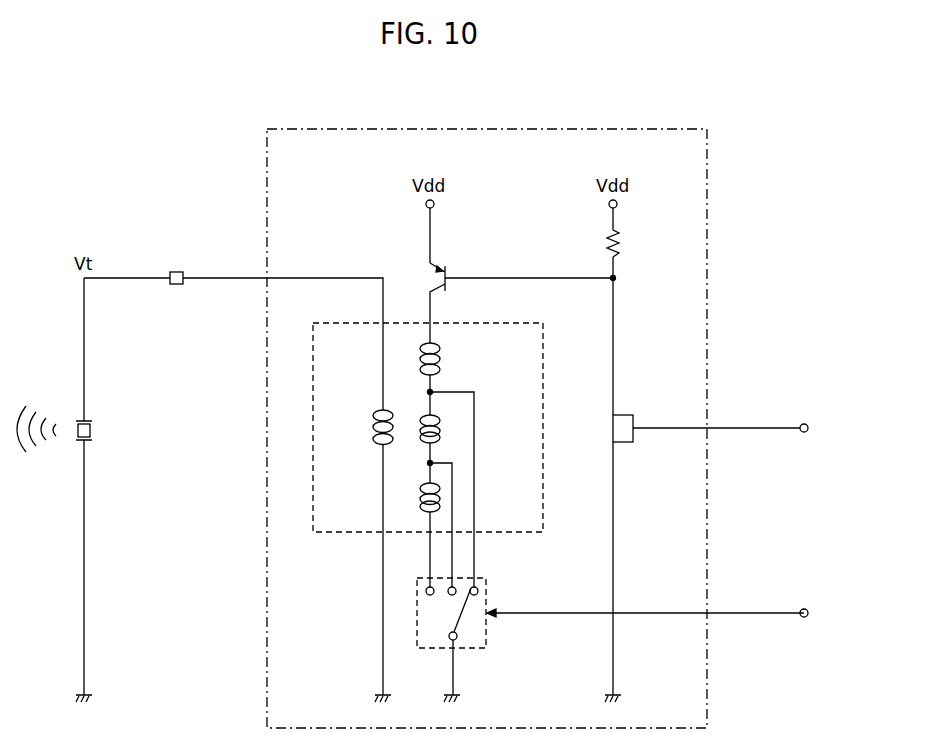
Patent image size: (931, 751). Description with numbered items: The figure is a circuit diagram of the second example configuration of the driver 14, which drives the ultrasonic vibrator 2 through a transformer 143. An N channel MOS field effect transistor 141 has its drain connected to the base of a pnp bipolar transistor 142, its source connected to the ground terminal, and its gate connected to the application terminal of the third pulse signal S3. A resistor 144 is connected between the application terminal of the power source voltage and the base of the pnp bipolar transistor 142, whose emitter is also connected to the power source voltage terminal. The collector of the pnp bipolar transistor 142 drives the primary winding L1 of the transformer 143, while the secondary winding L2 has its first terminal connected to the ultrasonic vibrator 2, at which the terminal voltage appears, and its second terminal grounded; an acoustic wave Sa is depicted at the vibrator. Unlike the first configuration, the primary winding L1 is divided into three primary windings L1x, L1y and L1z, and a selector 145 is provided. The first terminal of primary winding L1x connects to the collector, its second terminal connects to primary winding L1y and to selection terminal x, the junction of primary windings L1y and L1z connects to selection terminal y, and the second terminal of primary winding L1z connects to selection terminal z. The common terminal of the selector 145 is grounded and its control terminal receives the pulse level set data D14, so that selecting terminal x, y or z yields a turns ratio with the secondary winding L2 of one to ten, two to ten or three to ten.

The driver 14 is at (487, 129).
The ultrasonic vibrator 2 is at (96, 432).
The N channel MOS field effect transistor 141 is at (611, 428).
The pnp bipolar transistor 142 is at (448, 275).
The transformer 143 is at (483, 323).
The resistor 144 is at (626, 243).
The selector 145 is at (488, 582).
The primary winding L1 is at (521, 397).
The primary winding L1x is at (443, 360).
The primary winding L1y is at (441, 428).
The primary winding L1z is at (441, 498).
The secondary winding L2 is at (368, 430).
The acoustic signal Sa is at (42, 405).
The third pulse signal S3 is at (735, 431).
The pulse level set data D14 is at (668, 615).